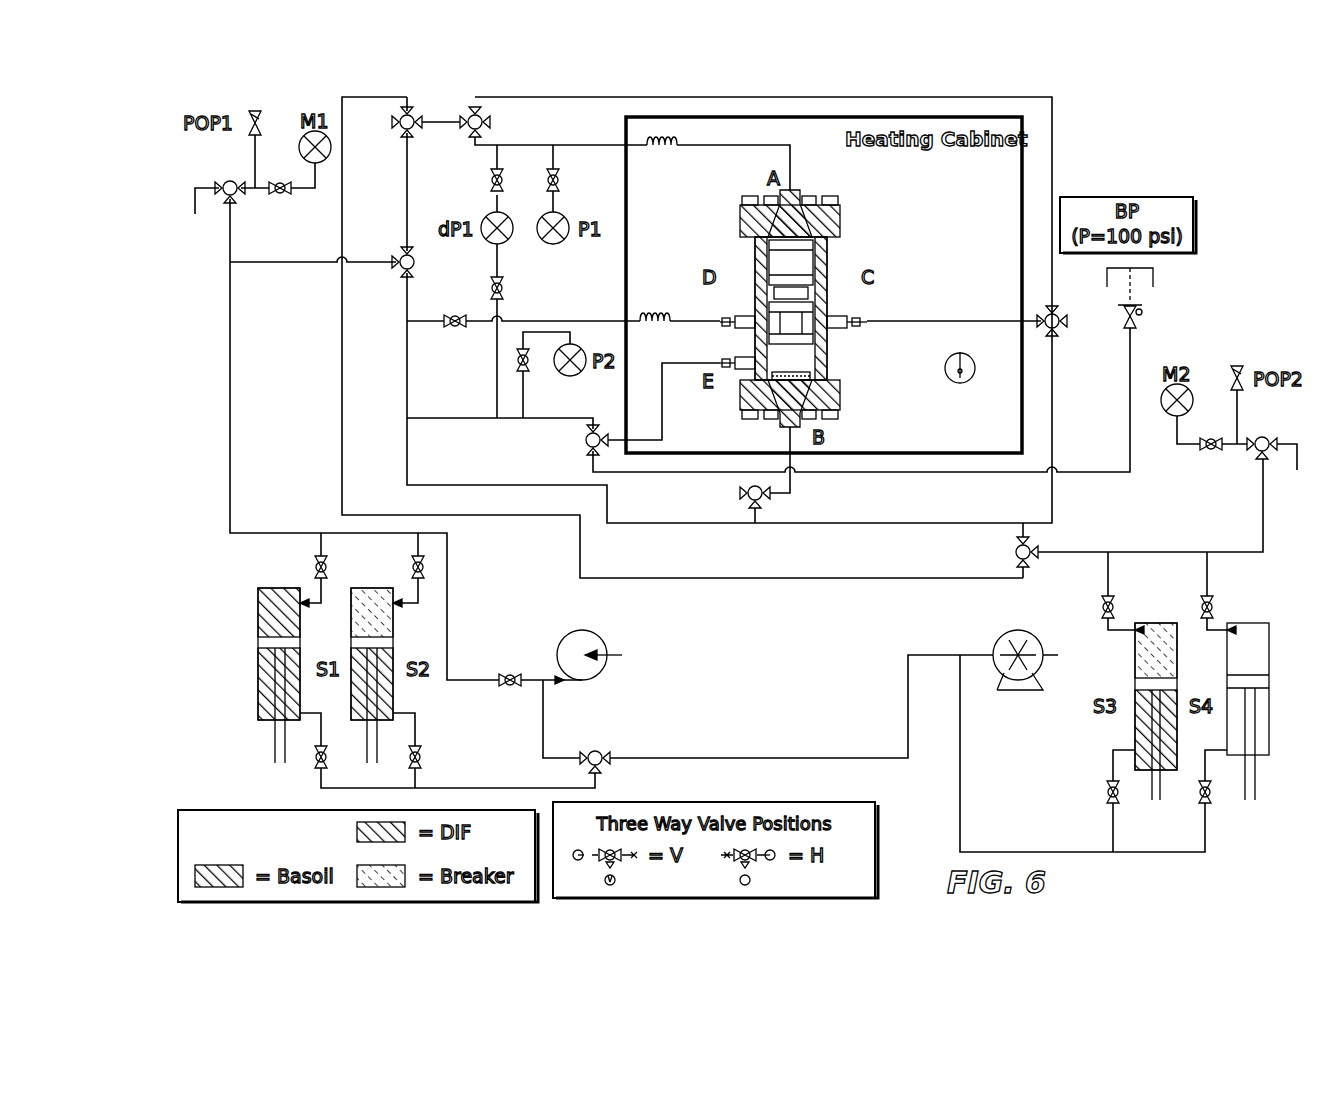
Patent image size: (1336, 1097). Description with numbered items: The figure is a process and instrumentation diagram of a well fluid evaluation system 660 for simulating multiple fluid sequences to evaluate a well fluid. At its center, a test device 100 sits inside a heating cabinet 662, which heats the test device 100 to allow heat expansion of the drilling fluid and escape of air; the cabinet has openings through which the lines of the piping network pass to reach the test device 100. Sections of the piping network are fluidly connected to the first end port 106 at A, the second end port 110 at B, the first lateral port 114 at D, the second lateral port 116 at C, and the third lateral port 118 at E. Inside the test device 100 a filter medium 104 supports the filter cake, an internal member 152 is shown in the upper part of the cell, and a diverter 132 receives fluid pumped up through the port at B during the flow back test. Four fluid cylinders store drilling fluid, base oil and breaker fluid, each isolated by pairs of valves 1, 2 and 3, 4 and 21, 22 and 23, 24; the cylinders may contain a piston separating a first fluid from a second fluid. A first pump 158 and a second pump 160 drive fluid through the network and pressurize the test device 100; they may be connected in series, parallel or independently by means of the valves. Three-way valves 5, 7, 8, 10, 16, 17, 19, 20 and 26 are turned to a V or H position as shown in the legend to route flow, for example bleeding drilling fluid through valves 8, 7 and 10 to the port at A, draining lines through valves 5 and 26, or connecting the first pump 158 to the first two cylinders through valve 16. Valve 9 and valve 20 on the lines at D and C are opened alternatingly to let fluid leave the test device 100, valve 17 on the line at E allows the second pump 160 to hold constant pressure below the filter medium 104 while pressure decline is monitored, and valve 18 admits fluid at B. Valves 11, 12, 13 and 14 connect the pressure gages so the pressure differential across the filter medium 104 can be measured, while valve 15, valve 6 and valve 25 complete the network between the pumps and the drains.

The valve 1 is at (333, 758).
The valve 2 is at (311, 570).
The valve 3 is at (426, 758).
The valve 4 is at (408, 570).
The valve 5 is at (226, 178).
The valve 6 is at (280, 180).
The valve 7 is at (398, 121).
The valve 8 is at (416, 262).
The valve 9 is at (449, 313).
The valve 10 is at (487, 122).
The valve 11 is at (488, 183).
The valve 12 is at (488, 291).
The valve 13 is at (562, 183).
The valve 14 is at (536, 362).
The valve 15 is at (504, 676).
The valve 16 is at (604, 751).
The valve 17 is at (583, 444).
The valve 18 is at (745, 494).
The valve 19 is at (1012, 555).
The valve 20 is at (1064, 324).
The valve 21 is at (1099, 608).
The valve 22 is at (1122, 794).
The valve 23 is at (1198, 608).
The valve 24 is at (1214, 794).
The valve 25 is at (1209, 456).
The valve 26 is at (1267, 436).
The test device 100 is at (860, 201).
The filter medium 104 is at (810, 340).
The first end port 106 is at (797, 190).
The second end port 110 is at (785, 430).
The first lateral port 114 is at (748, 318).
The second lateral port 116 is at (833, 318).
The third lateral port 118 is at (746, 360).
The diverter 132 is at (825, 390).
The sleeve 152 is at (822, 275).
The first pump 158 is at (588, 632).
The second pump 160 is at (1016, 632).
The well fluid evaluation system 660 is at (1188, 167).
The heating cabinet 662 is at (1025, 142).